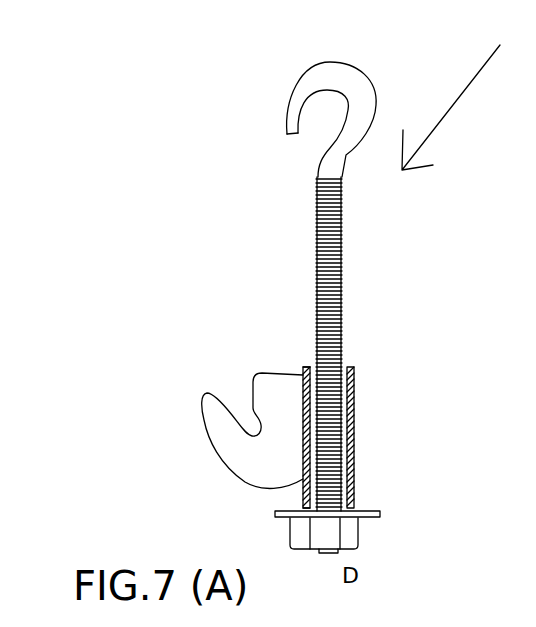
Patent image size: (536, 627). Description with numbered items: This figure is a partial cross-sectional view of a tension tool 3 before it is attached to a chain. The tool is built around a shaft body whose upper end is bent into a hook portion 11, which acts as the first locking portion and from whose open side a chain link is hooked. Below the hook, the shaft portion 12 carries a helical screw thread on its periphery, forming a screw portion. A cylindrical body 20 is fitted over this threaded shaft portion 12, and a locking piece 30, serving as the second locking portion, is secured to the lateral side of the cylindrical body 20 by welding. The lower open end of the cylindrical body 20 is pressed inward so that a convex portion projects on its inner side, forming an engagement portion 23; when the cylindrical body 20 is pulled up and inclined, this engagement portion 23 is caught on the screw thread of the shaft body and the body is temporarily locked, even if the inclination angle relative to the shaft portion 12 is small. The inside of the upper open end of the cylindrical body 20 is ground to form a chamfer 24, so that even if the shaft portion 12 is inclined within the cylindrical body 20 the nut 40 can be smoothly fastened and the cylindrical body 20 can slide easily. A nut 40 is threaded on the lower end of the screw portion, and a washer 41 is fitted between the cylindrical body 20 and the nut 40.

The tension tool 3 is at (465, 97).
The hook portion 11 is at (358, 95).
The shaft portion 12 is at (337, 260).
The cylindrical body 20 is at (352, 413).
The engagement portion 23 is at (302, 504).
The chamfer 24 is at (310, 366).
The locking piece 30 is at (275, 448).
The nut 40 is at (353, 535).
The washer 41 is at (375, 513).